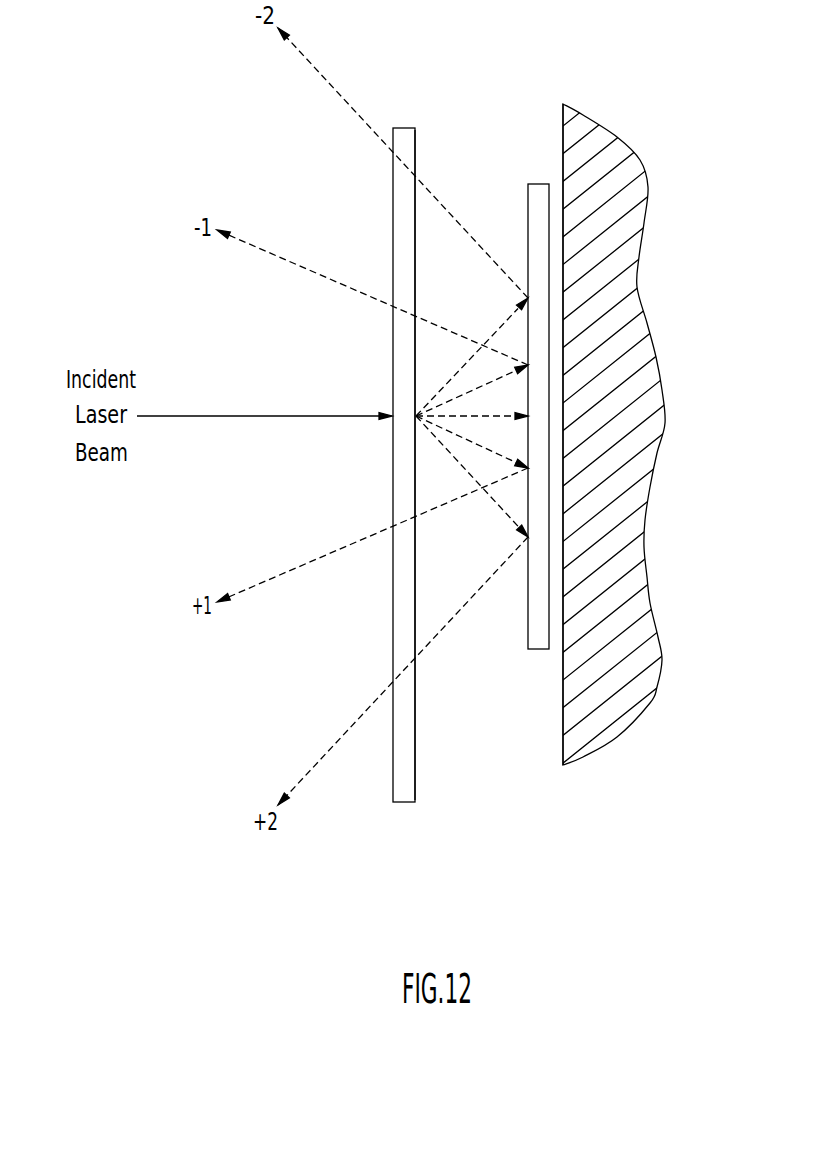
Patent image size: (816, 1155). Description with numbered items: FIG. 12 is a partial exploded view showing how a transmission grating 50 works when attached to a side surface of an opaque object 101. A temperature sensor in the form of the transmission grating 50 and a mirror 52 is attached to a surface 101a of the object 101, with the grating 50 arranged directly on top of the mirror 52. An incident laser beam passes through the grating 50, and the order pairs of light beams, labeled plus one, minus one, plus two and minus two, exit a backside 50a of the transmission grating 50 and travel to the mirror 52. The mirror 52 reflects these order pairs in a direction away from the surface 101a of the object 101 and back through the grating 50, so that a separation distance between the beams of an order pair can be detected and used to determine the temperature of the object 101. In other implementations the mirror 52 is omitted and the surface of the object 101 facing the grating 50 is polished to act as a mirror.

The transmission grating 50 is at (402, 128).
The backside of transmission grating 50a is at (415, 154).
The mirror 52 is at (537, 184).
The object 101 is at (635, 335).
The surface of the object 101a is at (563, 735).